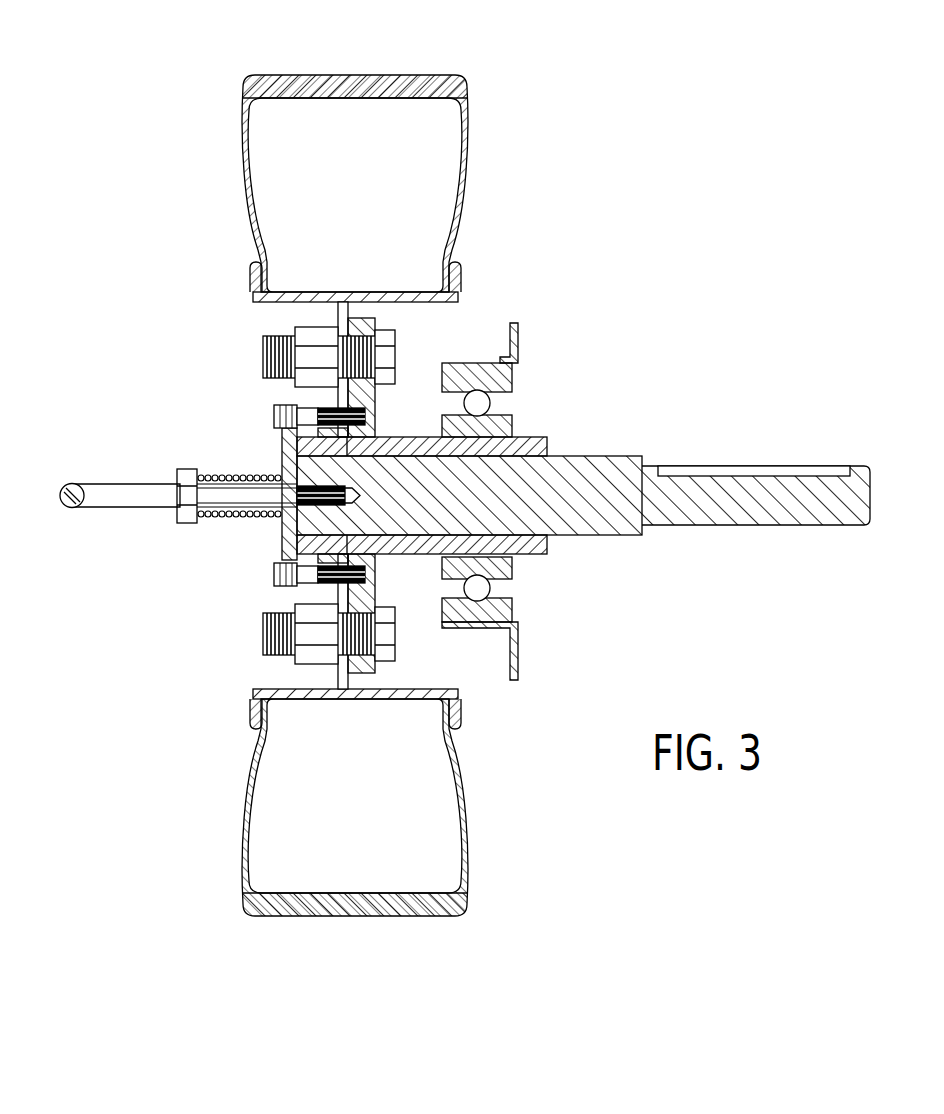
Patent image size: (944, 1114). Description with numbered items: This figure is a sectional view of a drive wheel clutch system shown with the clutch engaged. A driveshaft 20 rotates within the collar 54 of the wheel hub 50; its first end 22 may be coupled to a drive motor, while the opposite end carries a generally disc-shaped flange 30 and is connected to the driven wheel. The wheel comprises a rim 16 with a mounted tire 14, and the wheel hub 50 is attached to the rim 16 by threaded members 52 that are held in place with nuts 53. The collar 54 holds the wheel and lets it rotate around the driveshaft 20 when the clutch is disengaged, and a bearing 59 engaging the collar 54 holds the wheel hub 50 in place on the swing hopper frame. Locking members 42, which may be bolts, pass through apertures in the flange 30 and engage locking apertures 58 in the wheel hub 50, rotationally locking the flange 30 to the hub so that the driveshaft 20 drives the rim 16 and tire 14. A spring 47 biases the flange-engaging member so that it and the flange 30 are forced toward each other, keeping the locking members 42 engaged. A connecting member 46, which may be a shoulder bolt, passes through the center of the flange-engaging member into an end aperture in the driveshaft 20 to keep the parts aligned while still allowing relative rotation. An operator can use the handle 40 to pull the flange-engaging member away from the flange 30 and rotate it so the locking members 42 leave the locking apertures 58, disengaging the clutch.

The tire 14 is at (420, 75).
The rim 16 is at (455, 286).
The driveshaft 20 is at (598, 456).
The first end 22 is at (870, 495).
The flange 30 is at (282, 430).
The handle 40 is at (106, 487).
The locking members 42 is at (270, 412).
The connecting member 46 is at (185, 518).
The spring 47 is at (262, 470).
The wheel hub 50 is at (352, 307).
The threaded members 52 is at (265, 343).
The nuts 53 is at (295, 328).
The collar 54 is at (540, 437).
The locking apertures 58 is at (365, 415).
The bearing 59 is at (515, 325).